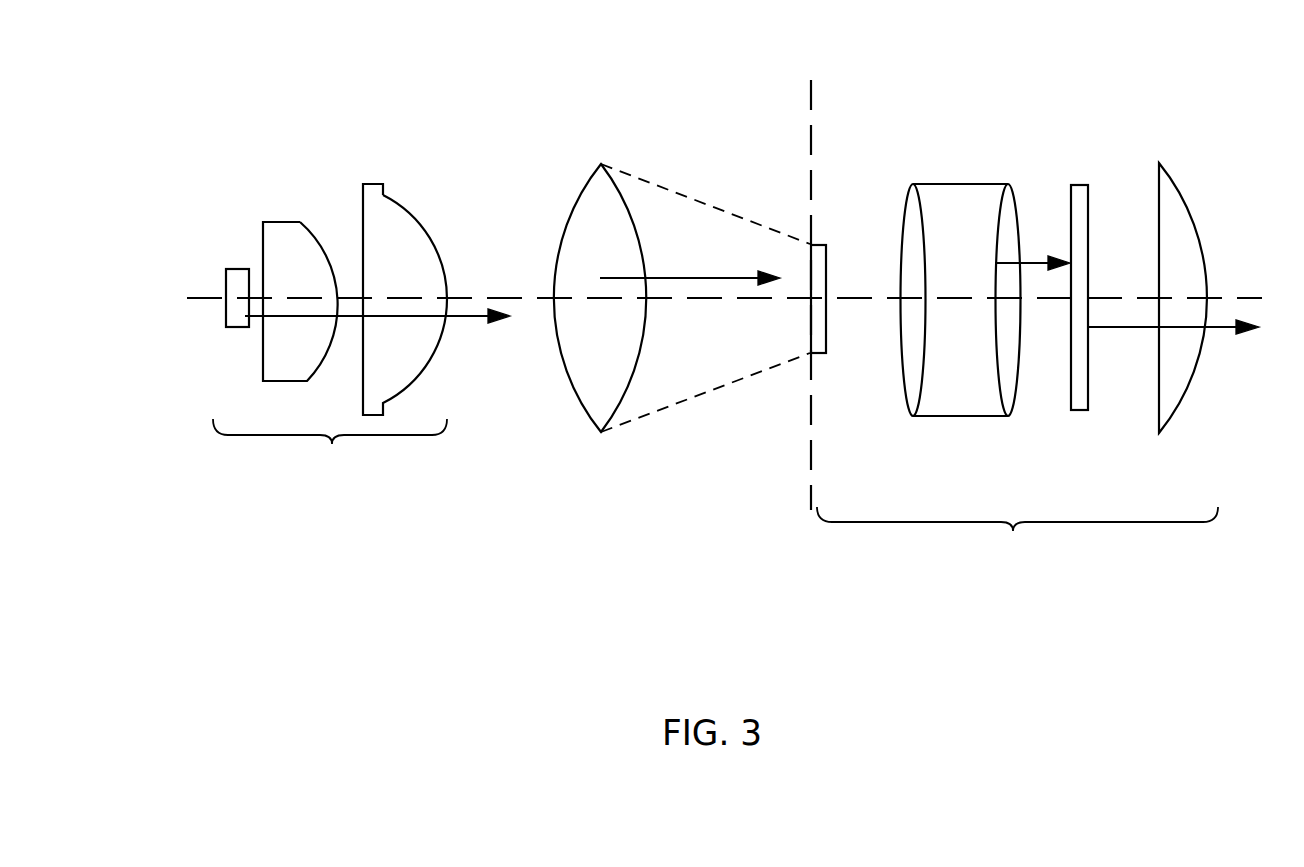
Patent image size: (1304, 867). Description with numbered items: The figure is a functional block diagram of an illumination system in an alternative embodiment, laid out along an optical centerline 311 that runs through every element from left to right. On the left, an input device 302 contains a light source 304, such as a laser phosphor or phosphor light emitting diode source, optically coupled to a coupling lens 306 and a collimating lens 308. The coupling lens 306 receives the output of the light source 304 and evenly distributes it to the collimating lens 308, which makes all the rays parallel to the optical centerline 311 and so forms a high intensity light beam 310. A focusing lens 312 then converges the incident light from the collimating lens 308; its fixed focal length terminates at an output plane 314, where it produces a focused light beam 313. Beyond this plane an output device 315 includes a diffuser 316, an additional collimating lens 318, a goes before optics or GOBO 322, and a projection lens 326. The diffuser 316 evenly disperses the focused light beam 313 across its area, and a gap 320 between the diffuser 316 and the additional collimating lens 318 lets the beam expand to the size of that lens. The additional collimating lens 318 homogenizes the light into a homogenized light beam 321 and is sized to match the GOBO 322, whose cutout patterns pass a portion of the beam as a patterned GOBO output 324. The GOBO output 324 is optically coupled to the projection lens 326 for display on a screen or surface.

The input device 302 is at (332, 444).
The light source 304 is at (225, 277).
The coupling lens 306 is at (301, 242).
The collimating lens 308 is at (403, 240).
The high intensity light beam 310 is at (453, 316).
The optical centerline 311 is at (507, 298).
The focusing lens 312 is at (620, 382).
The focused light beam 313 is at (657, 278).
The output plane 314 is at (810, 147).
The output device 315 is at (1013, 531).
The diffuser 316 is at (815, 343).
The additional collimating lens 318 is at (957, 373).
The gap 320 is at (862, 238).
The homogenized light beam 321 is at (1032, 262).
The goes before optics (GOBO) 322 is at (1079, 198).
The GOBO output 324 is at (1125, 327).
The projection lens 326 is at (1175, 222).